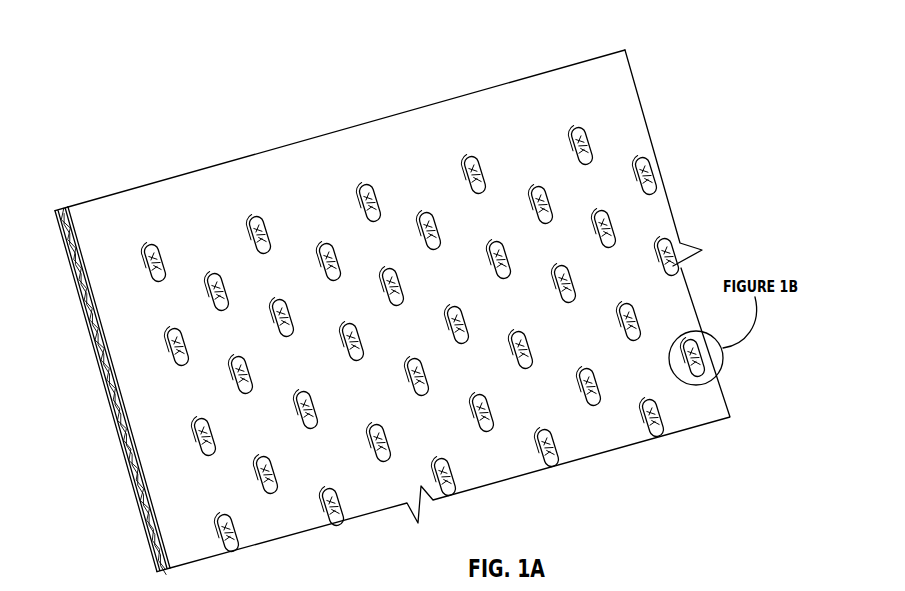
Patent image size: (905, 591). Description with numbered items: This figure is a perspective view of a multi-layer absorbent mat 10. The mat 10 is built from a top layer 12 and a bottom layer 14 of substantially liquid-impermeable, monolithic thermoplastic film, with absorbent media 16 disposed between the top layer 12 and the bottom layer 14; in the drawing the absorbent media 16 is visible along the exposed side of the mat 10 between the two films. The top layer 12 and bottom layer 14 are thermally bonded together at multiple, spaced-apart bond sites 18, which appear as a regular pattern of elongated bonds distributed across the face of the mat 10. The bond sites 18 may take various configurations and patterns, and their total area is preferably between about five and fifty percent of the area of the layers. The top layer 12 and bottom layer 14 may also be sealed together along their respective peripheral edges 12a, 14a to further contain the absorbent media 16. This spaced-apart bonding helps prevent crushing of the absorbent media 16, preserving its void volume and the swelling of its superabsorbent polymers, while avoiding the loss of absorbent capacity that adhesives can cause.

The multi-layer absorbent mat 10 is at (340, 86).
The top layer 12 is at (540, 113).
The peripheral edge of top layer 12a is at (237, 152).
The bottom layer 14 is at (108, 411).
The peripheral edge of bottom layer 14a is at (120, 484).
The absorbent media 16 is at (100, 350).
The bond sites 18 is at (322, 447).